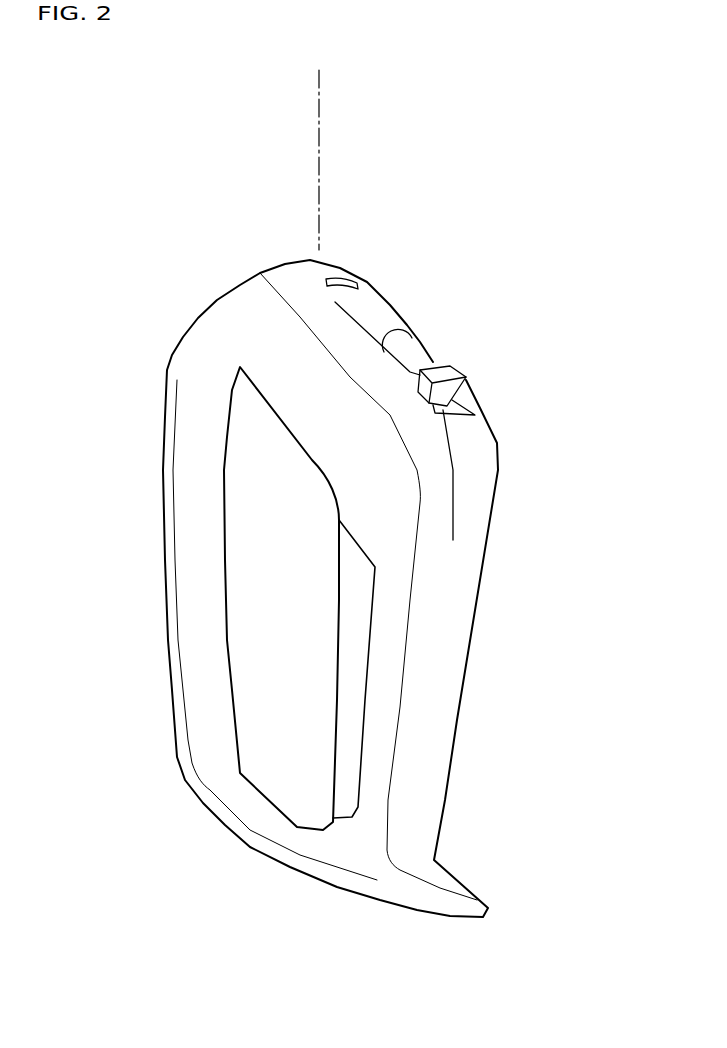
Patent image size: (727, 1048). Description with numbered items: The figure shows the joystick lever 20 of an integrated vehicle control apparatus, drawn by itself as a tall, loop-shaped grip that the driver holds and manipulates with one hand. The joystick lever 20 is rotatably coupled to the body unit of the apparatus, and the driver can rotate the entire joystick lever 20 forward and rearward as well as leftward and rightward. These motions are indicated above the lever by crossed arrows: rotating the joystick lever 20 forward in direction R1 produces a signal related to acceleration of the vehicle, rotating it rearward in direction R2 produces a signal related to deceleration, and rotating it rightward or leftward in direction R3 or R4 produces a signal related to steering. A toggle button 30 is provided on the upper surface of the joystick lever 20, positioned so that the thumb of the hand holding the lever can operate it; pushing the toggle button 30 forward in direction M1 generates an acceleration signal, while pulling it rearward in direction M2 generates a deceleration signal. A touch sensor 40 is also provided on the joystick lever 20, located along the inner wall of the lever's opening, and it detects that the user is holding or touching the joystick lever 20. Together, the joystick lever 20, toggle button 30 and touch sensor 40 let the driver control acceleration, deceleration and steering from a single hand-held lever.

The joystick lever 20 is at (442, 675).
The toggle button 30 is at (460, 368).
The touch sensor 40 is at (343, 687).
The forward rotation direction R1 is at (418, 187).
The rearward rotation direction R2 is at (428, 187).
The rightward rotation direction R3 is at (220, 187).
The leftward rotation direction R4 is at (209, 187).
The forward push direction M1 is at (477, 353).
The rearward pull direction M2 is at (485, 365).